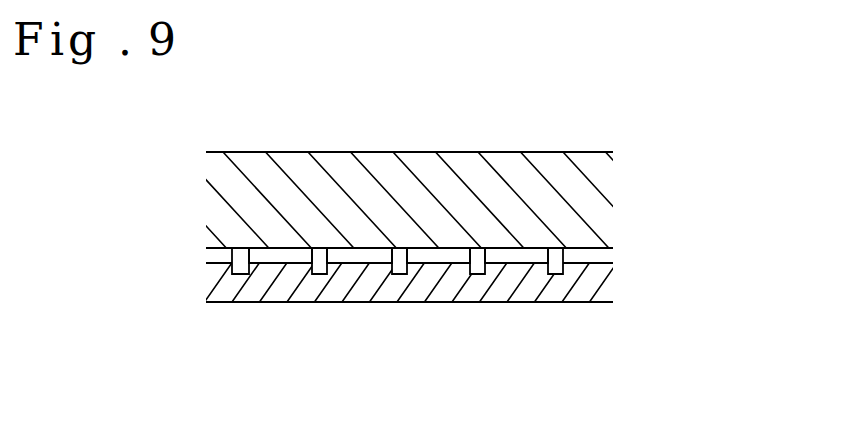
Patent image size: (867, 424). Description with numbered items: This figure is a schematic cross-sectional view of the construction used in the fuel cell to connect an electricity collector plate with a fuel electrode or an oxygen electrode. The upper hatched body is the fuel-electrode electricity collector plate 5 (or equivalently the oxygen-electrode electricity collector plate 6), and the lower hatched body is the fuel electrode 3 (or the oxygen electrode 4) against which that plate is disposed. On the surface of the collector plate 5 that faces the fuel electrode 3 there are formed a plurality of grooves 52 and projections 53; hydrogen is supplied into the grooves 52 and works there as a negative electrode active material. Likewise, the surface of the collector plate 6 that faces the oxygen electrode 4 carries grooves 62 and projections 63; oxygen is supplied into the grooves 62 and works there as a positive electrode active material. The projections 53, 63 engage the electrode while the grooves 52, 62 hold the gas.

The fuel electrode 3 is at (587, 280).
The oxygen electrode 4 is at (474, 291).
The fuel-electrode electricity collector plate 5 is at (563, 210).
The oxygen-electrode electricity collector plate 6 is at (406, 200).
The groove 52 is at (274, 252).
The projection 53 is at (244, 264).
The groove 62 is at (373, 176).
The projection 63 is at (327, 275).